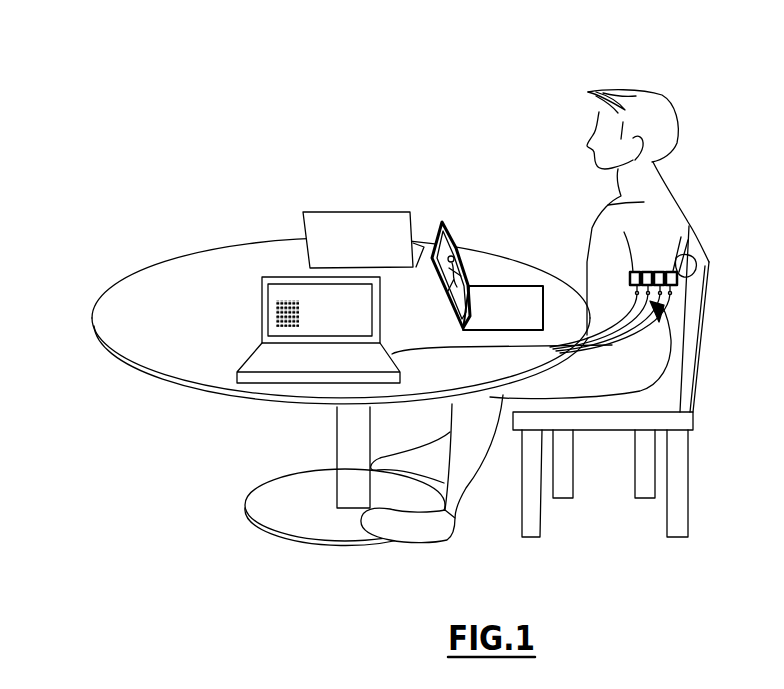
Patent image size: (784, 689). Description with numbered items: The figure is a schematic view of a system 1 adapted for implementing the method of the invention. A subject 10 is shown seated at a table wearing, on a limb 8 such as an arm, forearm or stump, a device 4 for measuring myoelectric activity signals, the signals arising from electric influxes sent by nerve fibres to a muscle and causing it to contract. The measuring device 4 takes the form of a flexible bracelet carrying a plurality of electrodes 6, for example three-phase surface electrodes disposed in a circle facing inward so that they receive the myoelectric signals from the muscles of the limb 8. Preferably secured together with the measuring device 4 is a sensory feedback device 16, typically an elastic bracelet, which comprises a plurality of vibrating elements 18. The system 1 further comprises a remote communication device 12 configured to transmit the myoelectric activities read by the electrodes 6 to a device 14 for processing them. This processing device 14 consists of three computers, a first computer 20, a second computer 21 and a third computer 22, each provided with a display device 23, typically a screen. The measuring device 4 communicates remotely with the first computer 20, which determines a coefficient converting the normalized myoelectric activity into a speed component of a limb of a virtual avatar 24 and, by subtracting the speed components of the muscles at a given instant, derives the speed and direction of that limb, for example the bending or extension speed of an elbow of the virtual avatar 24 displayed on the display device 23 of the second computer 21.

The system 1 is at (696, 274).
The device for measuring 4 is at (674, 290).
The electrodes 6 is at (685, 257).
The limb 8 is at (681, 249).
The subject 10 is at (705, 93).
The remote communication device 12 is at (627, 274).
The device for processing 14 is at (322, 190).
The sensory feedback device 16 is at (666, 336).
The vibrating elements 18 is at (672, 303).
The first computer 20 is at (390, 237).
The second computer 21 is at (444, 222).
The third computer 22 is at (279, 278).
The display device 23 is at (268, 312).
The virtual avatar 24 is at (449, 276).